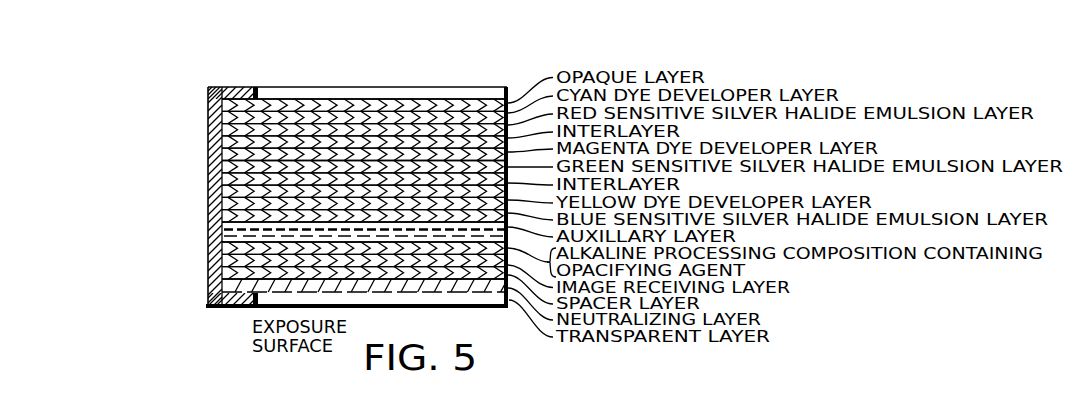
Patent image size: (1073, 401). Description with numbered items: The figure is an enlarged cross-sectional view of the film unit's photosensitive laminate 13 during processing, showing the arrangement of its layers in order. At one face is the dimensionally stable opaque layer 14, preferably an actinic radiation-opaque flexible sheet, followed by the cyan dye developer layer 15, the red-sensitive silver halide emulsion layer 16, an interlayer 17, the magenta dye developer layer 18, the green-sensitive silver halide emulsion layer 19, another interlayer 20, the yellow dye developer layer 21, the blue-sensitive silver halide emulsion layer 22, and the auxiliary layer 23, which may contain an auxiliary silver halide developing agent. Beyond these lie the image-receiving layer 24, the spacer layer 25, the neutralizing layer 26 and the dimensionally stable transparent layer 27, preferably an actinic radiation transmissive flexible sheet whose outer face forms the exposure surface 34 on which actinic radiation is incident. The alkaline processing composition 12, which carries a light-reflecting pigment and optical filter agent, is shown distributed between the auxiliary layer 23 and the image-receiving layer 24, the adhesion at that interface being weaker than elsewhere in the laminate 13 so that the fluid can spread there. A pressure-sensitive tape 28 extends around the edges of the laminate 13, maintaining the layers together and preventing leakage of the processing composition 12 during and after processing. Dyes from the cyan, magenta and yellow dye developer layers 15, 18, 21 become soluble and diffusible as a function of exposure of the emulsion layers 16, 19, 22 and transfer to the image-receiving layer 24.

The aqueous processing composition 12 is at (227, 235).
The photosensitive laminate 13 is at (297, 77).
The dimensionally stable opaque layer 14 is at (229, 104).
The cyan dye developer layer 15 is at (229, 116).
The red-sensitive silver halide emulsion layer 16 is at (229, 129).
The interlayer 17 is at (229, 141).
The magenta dye developer layer 18 is at (229, 154).
The green-sensitive silver halide emulsion layer 19 is at (229, 166).
The interlayer 20 is at (229, 180).
The yellow dye developer layer 21 is at (229, 193).
The blue-sensitive silver halide emulsion layer 22 is at (229, 207).
The auxiliary layer 23 is at (226, 221).
The image-receiving layer 24 is at (228, 249).
The spacer layer 25 is at (228, 263).
The neutralizing layer 26 is at (230, 279).
The dimensionally stable transparent layer 27 is at (226, 300).
The pressure-sensitive tape 28 is at (231, 92).
The exposure surface 34 is at (488, 298).